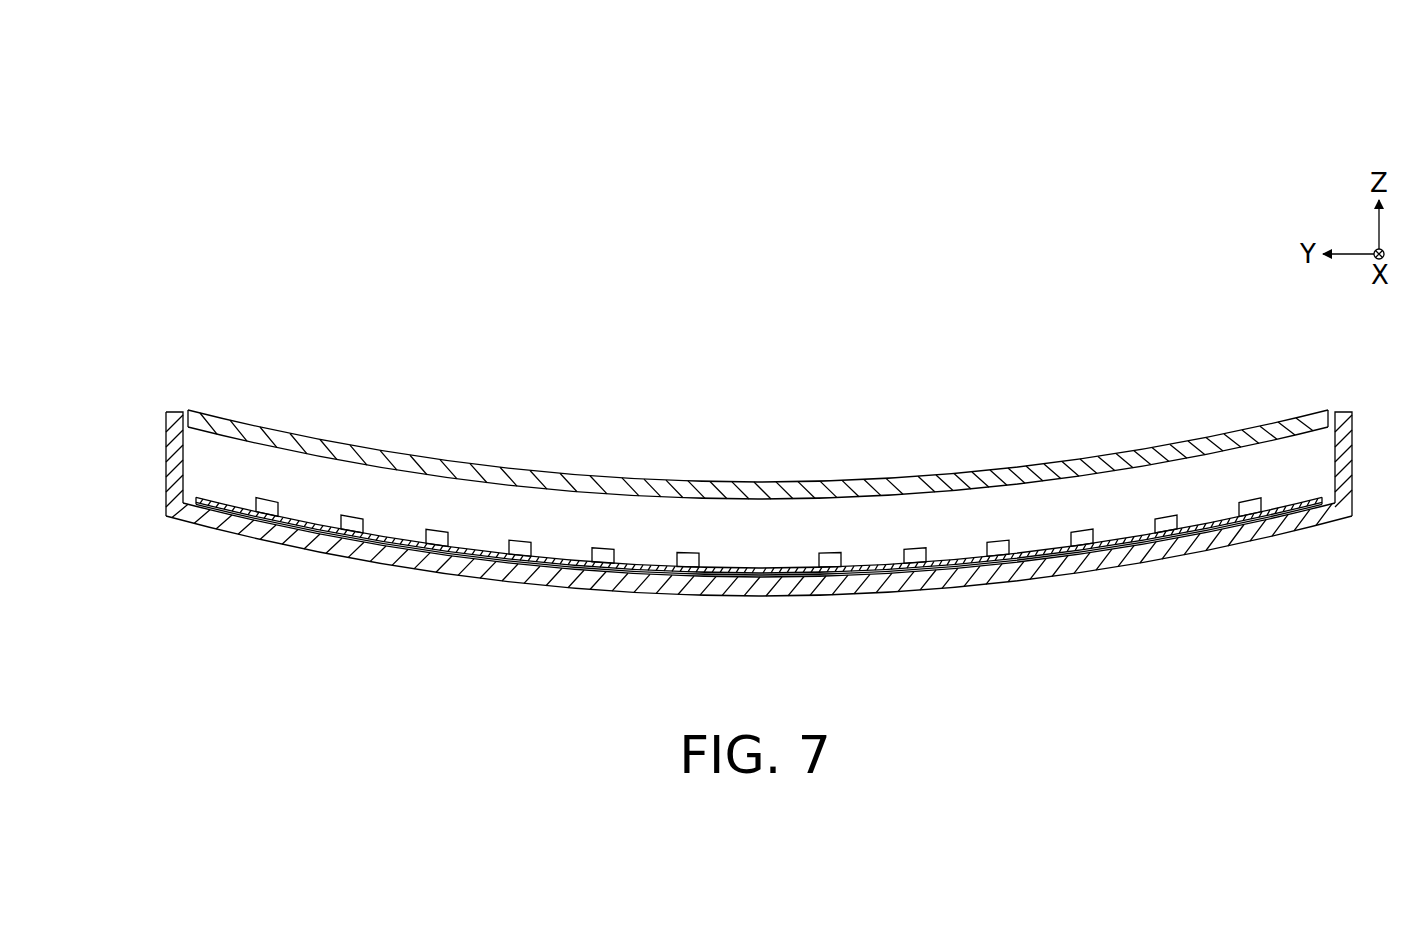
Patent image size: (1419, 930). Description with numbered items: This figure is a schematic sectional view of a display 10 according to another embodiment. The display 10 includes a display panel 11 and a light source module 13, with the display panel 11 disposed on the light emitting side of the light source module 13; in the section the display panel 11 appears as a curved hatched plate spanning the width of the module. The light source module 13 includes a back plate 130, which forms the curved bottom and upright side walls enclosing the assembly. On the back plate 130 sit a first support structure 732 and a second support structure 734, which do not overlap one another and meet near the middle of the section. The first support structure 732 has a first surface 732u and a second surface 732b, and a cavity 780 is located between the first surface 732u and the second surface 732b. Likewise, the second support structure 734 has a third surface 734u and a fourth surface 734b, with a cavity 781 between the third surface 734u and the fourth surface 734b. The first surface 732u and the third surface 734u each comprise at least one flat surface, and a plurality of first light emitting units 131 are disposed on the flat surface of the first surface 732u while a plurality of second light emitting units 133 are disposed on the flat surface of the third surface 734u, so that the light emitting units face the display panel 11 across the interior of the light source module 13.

The display 10 is at (144, 322).
The display panel 11 is at (1247, 437).
The light source module 13 is at (1236, 572).
The back plate 130 is at (905, 597).
The first light emitting units 131 is at (913, 549).
The second light emitting units 133 is at (352, 514).
The first support structure 732 is at (1112, 556).
The first surface 732u is at (1041, 536).
The second surface 732b is at (1050, 561).
The second support structure 734 is at (410, 560).
The third surface 734u is at (398, 533).
The fourth surface 734b is at (501, 568).
The cavity 780 is at (1115, 546).
The cavity 781 is at (481, 556).